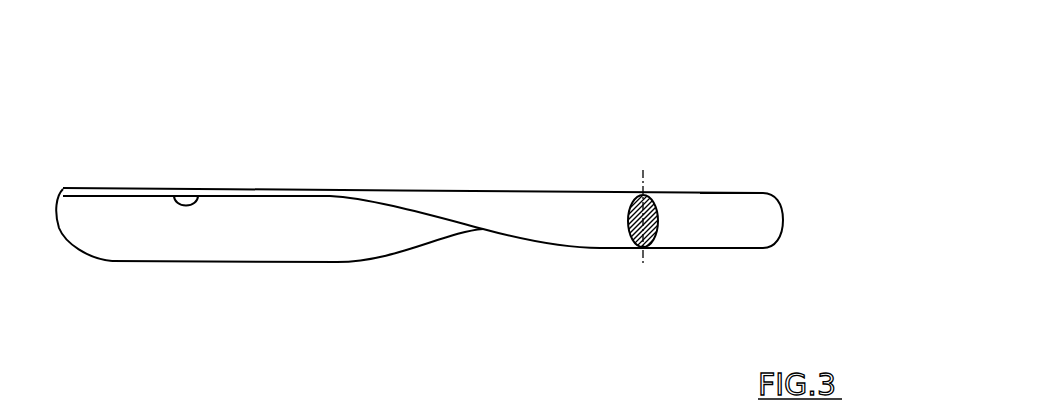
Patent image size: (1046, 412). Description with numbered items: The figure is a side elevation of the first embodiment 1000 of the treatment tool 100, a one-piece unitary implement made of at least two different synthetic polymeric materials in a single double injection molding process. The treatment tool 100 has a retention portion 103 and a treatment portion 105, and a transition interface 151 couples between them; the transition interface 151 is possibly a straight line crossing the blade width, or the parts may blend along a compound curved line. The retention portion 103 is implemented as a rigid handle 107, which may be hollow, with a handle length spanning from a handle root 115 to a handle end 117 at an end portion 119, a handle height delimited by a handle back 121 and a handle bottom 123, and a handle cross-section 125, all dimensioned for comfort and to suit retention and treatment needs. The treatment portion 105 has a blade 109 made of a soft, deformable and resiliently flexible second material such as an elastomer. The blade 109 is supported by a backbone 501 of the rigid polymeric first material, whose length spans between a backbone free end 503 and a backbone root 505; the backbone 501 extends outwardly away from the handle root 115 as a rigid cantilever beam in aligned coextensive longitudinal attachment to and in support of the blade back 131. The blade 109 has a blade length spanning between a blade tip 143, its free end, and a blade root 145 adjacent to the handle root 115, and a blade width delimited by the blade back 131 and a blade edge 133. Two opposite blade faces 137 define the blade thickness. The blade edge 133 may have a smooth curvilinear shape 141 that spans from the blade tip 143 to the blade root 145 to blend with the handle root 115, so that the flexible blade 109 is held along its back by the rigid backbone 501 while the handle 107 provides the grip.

The first embodiment 1000 is at (213, 72).
The treatment tool 100 is at (522, 138).
The retention portion 103 is at (613, 157).
The treatment portion 105 is at (285, 130).
The handle 107 is at (782, 217).
The blade 109 is at (177, 245).
The handle root 115 is at (490, 222).
The handle end 117 is at (767, 250).
The end portion 119 is at (712, 230).
The handle back 121 is at (737, 195).
The handle bottom 123 is at (690, 250).
The handle cross-section 125 is at (650, 195).
The blade back 131 is at (174, 192).
The blade edge 133 is at (233, 263).
The blade faces 137 is at (100, 240).
The smooth curvilinear shape 141 is at (333, 323).
The blade tip 143 is at (60, 237).
The blade root 145 is at (417, 233).
The transition interface 151 is at (452, 278).
The backbone 501 is at (277, 190).
The backbone free end 503 is at (67, 190).
The backbone root 505 is at (410, 195).